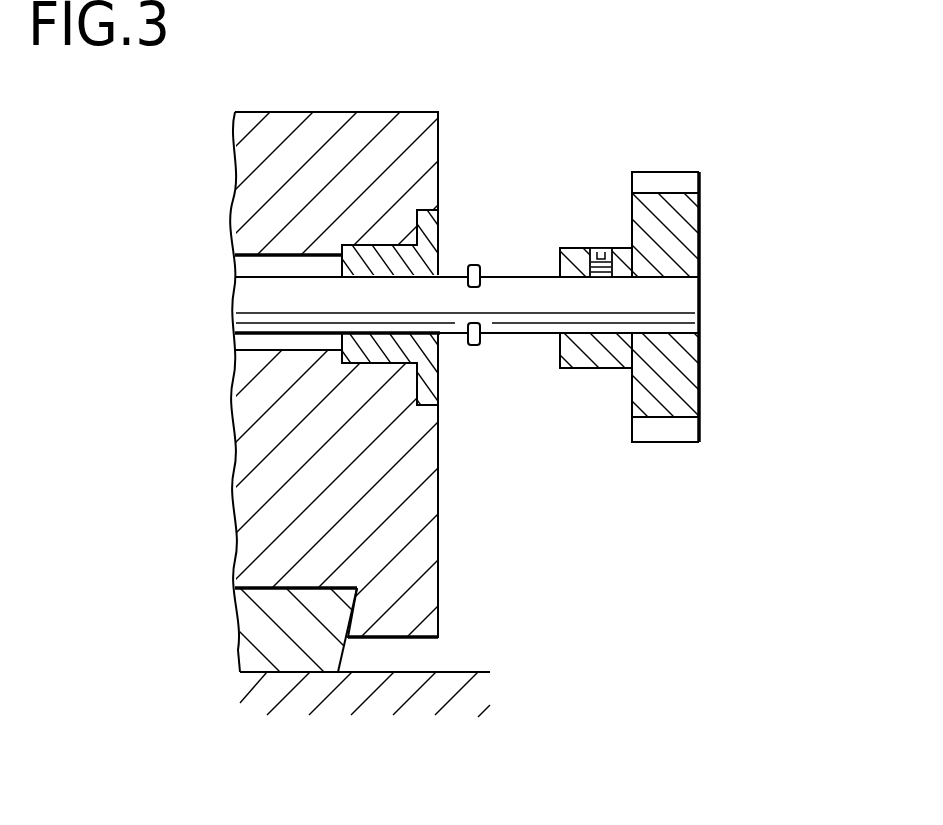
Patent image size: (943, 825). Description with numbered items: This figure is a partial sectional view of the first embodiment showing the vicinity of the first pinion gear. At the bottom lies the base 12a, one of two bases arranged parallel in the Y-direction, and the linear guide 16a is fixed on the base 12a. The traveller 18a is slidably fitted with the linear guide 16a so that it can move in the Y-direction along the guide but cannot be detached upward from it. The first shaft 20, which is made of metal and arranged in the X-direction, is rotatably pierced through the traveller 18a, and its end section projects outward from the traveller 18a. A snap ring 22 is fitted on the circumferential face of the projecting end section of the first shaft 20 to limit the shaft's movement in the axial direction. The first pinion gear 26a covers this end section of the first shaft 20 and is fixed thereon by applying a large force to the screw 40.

The base 12a is at (460, 672).
The linear guide 16a is at (262, 635).
The traveller 18a is at (250, 486).
The first shaft 20 is at (250, 297).
The snap ring 22 is at (475, 265).
The first pinion gear 26a is at (683, 238).
The screw 40 is at (603, 250).